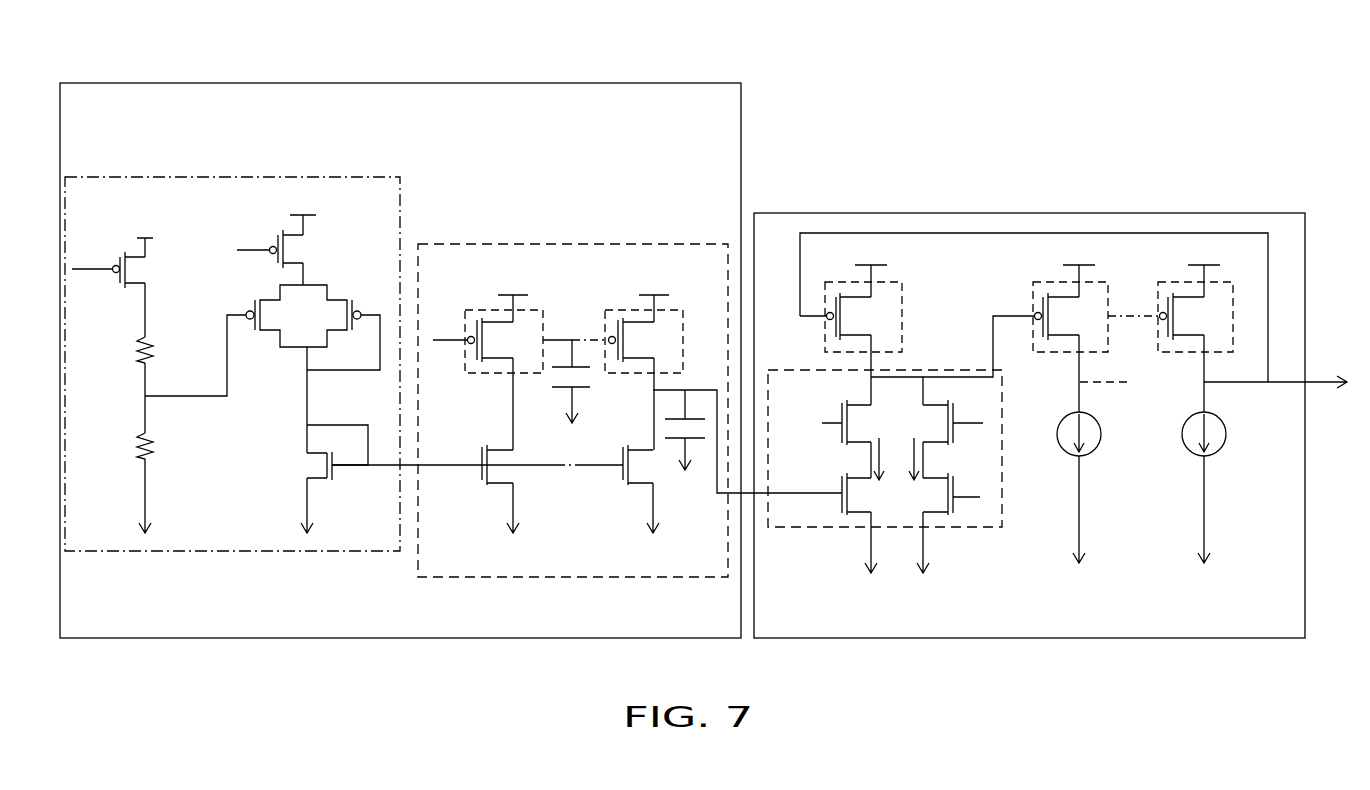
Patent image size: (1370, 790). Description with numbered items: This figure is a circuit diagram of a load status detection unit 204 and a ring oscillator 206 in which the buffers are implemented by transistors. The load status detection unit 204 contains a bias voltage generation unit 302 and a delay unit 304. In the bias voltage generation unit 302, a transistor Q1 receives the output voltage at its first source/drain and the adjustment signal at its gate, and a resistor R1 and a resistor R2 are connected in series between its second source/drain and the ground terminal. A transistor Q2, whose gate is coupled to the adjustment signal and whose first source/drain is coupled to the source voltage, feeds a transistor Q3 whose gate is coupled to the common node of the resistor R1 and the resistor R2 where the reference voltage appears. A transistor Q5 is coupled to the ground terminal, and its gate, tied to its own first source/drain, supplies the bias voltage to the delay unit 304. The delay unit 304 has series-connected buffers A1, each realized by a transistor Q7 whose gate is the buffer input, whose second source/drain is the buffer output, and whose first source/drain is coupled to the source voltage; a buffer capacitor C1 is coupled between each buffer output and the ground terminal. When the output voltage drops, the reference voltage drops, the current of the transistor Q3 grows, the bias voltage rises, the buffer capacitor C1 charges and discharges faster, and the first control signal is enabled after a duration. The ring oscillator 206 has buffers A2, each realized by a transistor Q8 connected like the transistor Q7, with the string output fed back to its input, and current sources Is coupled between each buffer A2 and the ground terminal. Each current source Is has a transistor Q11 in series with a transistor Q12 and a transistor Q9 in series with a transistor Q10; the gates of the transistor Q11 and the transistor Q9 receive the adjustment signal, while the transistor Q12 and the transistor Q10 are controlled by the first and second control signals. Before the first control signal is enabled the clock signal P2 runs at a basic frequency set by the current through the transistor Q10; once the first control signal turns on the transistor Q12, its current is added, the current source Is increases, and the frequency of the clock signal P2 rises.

The load status detection unit 204 is at (430, 82).
The ring oscillator 206 is at (1022, 212).
The bias voltage generation unit 302 is at (365, 177).
The delay unit 304 is at (603, 243).
The buffer A1 is at (543, 330).
The buffer A2 is at (903, 303).
The transistor Q1 is at (121, 272).
The transistor Q2 is at (278, 234).
The transistor Q3 is at (313, 327).
The transistor Q5 is at (329, 445).
The transistor Q7 is at (548, 355).
The transistor Q8 is at (1025, 323).
The transistor Q9 is at (963, 422).
The transistor Q10 is at (966, 523).
The transistor Q11 is at (834, 439).
The transistor Q12 is at (828, 535).
The resistor R1 is at (158, 352).
The resistor R2 is at (157, 451).
The buffer capacitor C1 is at (692, 424).
The current source Is is at (980, 527).
The clock signal P2 is at (1276, 364).